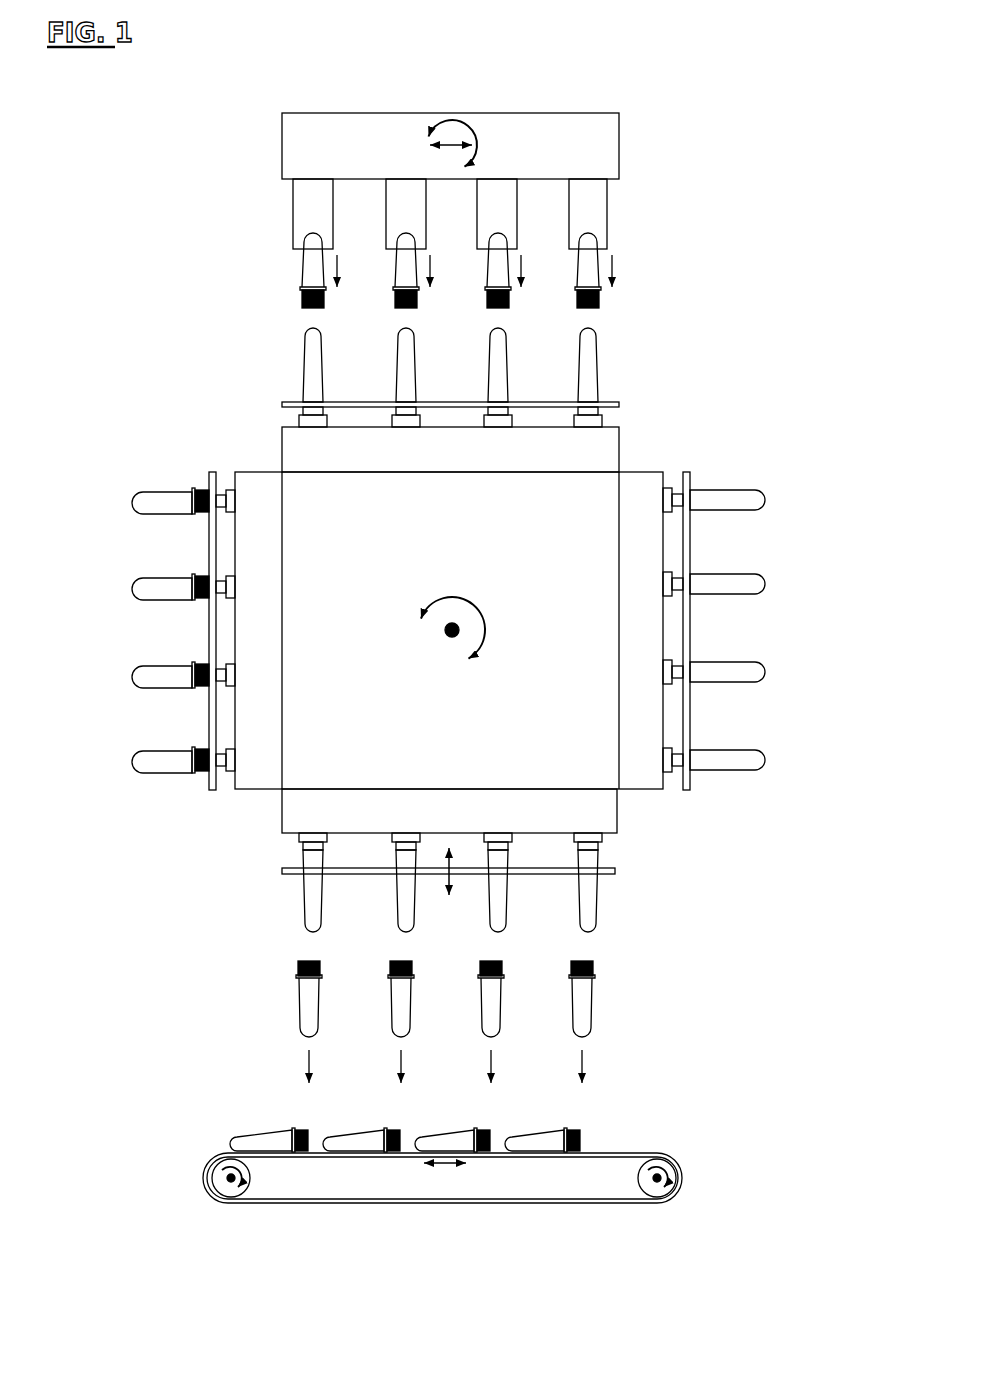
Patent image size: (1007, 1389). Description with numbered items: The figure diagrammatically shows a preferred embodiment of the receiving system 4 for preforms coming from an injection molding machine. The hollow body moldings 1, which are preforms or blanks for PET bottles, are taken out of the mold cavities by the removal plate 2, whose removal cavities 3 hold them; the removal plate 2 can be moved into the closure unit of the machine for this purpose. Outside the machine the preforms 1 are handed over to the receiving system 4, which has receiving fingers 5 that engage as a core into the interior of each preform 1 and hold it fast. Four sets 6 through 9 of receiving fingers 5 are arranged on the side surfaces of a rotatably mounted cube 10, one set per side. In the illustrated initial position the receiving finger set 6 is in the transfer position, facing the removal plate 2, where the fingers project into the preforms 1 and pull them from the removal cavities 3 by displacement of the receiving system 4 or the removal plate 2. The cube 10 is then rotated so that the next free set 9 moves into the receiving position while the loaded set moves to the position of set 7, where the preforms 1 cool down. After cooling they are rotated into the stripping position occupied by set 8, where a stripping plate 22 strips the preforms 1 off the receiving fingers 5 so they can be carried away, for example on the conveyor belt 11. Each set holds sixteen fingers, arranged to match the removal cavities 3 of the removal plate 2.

The hollow body molding 1 is at (308, 280).
The removal plate 2 is at (587, 137).
The removal cavity 3 is at (590, 200).
The receiving system 4 is at (525, 539).
The receiving finger 5 is at (498, 912).
The set of receiving fingers 6 is at (387, 373).
The set of receiving fingers 7 is at (175, 592).
The set of receiving fingers 8 is at (404, 916).
The set of receiving fingers 9 is at (715, 593).
The cube 10 is at (600, 783).
The conveyor belt 11 is at (469, 1138).
The stripping plate 22 is at (690, 553).